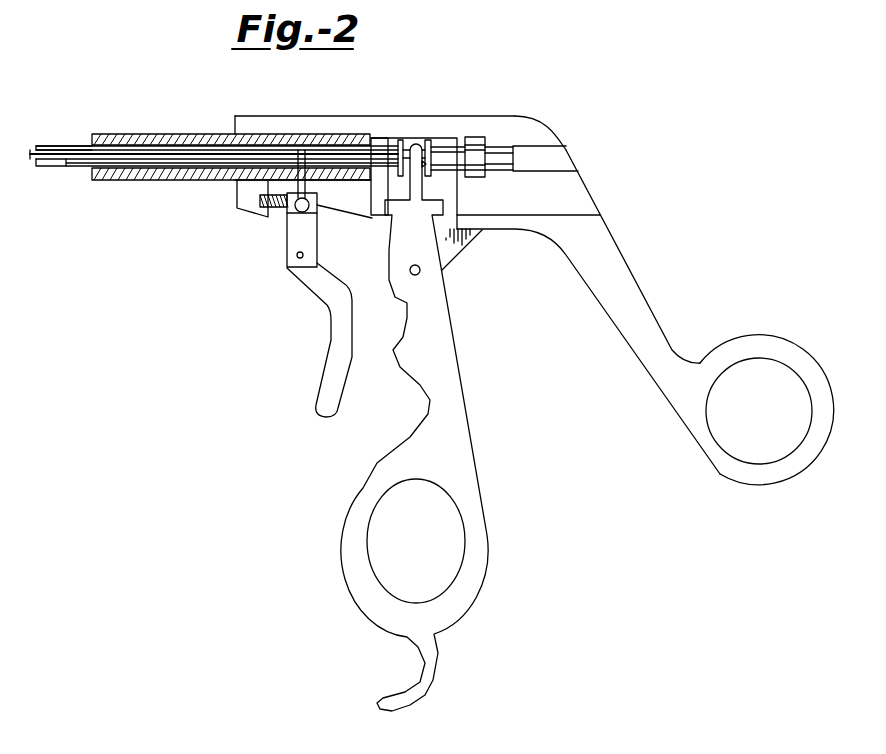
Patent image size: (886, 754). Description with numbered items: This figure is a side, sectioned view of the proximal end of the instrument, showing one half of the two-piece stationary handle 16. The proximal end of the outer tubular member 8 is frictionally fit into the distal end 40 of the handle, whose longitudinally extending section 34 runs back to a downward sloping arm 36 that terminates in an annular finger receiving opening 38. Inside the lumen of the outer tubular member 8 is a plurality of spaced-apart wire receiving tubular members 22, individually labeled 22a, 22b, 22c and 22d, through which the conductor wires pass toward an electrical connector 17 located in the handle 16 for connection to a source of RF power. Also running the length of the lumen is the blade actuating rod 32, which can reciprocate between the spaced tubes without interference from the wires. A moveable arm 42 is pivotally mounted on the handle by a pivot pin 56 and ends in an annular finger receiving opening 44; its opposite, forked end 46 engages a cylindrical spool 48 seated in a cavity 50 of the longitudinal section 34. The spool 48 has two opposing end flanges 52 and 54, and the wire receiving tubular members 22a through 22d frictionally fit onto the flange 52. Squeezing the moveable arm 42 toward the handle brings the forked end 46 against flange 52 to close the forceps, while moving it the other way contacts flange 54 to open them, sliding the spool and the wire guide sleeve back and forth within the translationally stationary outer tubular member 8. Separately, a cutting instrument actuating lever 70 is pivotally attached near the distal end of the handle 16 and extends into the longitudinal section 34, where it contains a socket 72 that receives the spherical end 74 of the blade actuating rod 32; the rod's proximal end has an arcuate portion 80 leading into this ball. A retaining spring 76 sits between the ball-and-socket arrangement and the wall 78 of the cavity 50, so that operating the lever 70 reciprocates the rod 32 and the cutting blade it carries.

The outer tubular member 8 is at (133, 180).
The stationary handle 16 is at (560, 120).
The electrical connector 17 is at (478, 136).
The wire receiving tubular members 22 is at (73, 133).
The wire receiving tubular member 22a is at (52, 143).
The wire receiving tubular member 22b is at (84, 144).
The wire receiving tubular member 22c is at (44, 163).
The wire receiving tubular member 22d is at (88, 163).
The blade actuating rod 32 is at (96, 160).
The longitudinally extending section 34 is at (298, 116).
The downward sloping arm 36 is at (630, 267).
The annular finger receiving opening 38 is at (757, 443).
The distal end of the handle 40 is at (234, 120).
The moveable arm 42 is at (468, 423).
The annular finger receiving opening 44 is at (440, 568).
The forked end 46 is at (414, 165).
The cylindrical spool 48 is at (414, 138).
The cavity 50 is at (386, 136).
The spool end flange 52 is at (400, 138).
The spool end flange 54 is at (432, 138).
The pivot pin 56 is at (416, 275).
The cutting instrument actuating lever 70 is at (330, 336).
The socket 72 is at (283, 210).
The spherical end 74 is at (317, 207).
The retaining spring 76 is at (258, 190).
The wall of the cavity 78 is at (262, 209).
The arcuate portion 80 is at (302, 150).